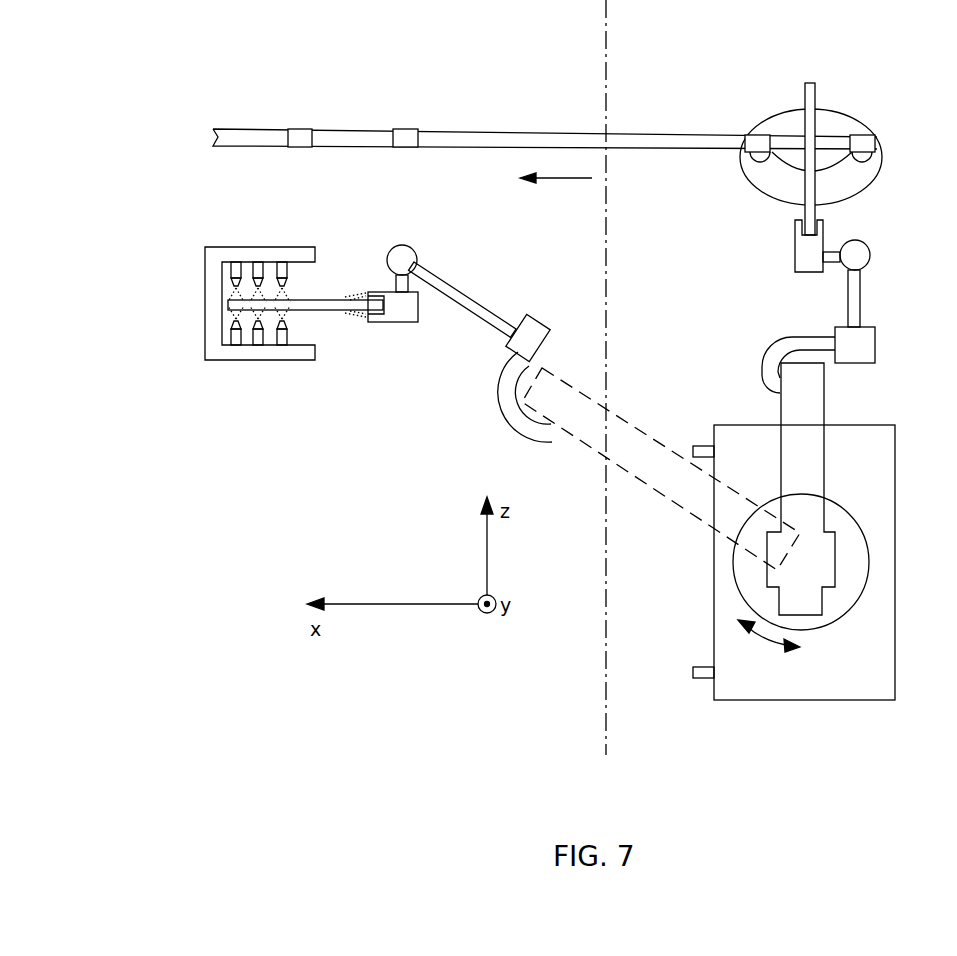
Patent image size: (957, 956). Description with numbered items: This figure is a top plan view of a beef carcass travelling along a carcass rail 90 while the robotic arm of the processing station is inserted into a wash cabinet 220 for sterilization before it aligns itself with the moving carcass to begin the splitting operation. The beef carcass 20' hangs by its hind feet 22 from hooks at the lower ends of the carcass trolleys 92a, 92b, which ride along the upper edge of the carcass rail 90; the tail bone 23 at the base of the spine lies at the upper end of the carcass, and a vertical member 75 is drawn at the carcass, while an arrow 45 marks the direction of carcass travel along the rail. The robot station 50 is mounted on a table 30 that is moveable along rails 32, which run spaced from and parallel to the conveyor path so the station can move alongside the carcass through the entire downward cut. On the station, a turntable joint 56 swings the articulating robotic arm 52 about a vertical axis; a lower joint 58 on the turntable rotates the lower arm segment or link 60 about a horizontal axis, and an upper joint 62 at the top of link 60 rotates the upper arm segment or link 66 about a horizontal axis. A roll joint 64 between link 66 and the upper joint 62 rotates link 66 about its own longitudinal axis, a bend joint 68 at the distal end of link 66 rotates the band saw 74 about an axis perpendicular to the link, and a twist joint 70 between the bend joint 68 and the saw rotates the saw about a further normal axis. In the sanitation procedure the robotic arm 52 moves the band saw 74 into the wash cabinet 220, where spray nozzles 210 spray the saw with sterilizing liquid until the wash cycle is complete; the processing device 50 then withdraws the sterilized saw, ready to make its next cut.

The carcass rail 90 is at (578, 128).
The direction of movement arrow 45 is at (586, 184).
The beef carcass 20' is at (811, 133).
The tail bone 23 is at (812, 178).
The hind feet 22 is at (760, 176).
The carcass trolley 92a is at (757, 131).
The carcass trolley 92b is at (860, 130).
The pin 75 is at (804, 90).
The band saw 74 is at (792, 256).
The twist joint 70 is at (834, 266).
The bend joint 68 is at (862, 256).
The upper arm segment or link 66 is at (858, 300).
The roll joint 64 is at (866, 344).
The upper joint 62 is at (794, 344).
The lower arm segment or link 60 is at (818, 410).
The articulating robotic arm 52 is at (757, 408).
The table 30 is at (838, 700).
The rails 32 is at (700, 680).
The turntable joint 56 is at (838, 520).
The robot station 50 is at (888, 536).
The lower joint 58 is at (807, 582).
The wash cabinet 220 is at (208, 305).
The spray nozzles 210 is at (238, 362).